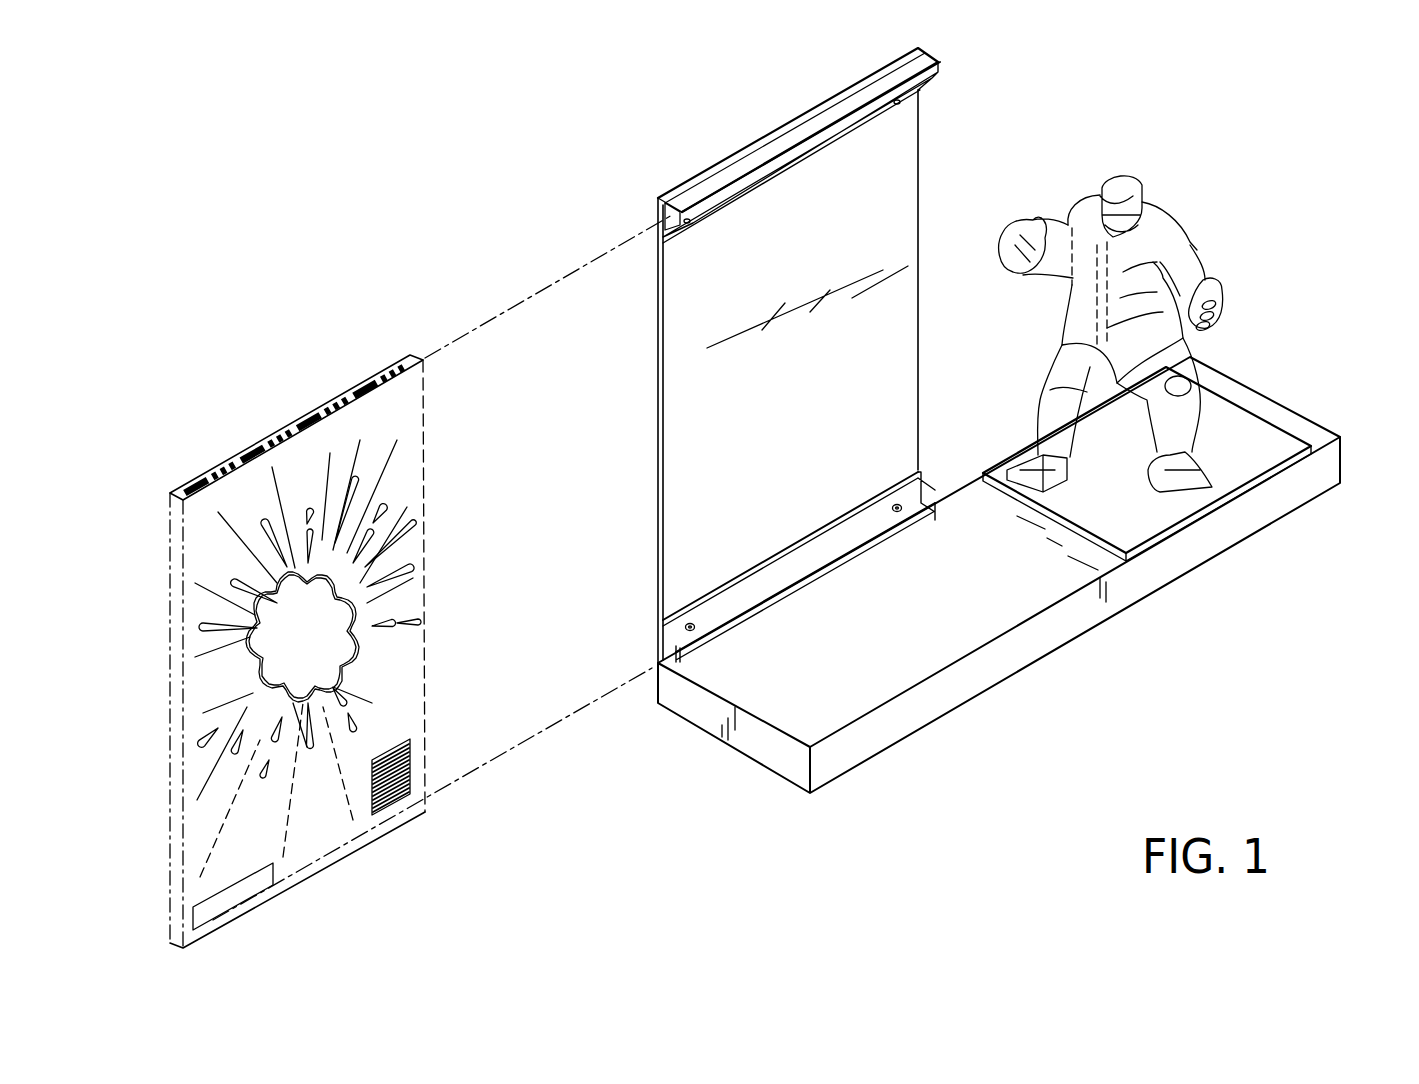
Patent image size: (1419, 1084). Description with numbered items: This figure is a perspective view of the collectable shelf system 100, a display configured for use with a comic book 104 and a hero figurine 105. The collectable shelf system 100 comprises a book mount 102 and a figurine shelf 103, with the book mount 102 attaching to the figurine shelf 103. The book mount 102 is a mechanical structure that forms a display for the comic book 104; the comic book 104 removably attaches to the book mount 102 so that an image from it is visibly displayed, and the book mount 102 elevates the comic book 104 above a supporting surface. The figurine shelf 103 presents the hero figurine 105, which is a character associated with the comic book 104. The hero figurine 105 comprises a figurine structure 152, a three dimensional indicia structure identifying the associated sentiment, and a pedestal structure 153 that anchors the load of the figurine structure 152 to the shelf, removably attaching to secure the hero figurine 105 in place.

The collectable shelf system 100 is at (268, 176).
The book mount 102 is at (912, 148).
The figurine shelf 103 is at (1155, 575).
The comic book 104 is at (352, 852).
The hero figurine 105 is at (1370, 285).
The figurine structure 152 is at (1192, 242).
The pedestal structure 153 is at (1268, 435).